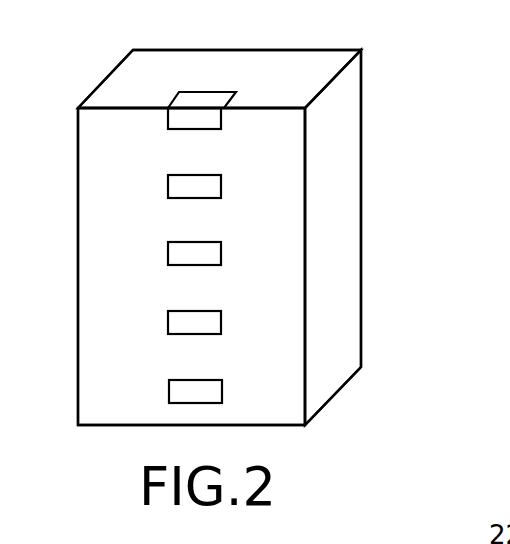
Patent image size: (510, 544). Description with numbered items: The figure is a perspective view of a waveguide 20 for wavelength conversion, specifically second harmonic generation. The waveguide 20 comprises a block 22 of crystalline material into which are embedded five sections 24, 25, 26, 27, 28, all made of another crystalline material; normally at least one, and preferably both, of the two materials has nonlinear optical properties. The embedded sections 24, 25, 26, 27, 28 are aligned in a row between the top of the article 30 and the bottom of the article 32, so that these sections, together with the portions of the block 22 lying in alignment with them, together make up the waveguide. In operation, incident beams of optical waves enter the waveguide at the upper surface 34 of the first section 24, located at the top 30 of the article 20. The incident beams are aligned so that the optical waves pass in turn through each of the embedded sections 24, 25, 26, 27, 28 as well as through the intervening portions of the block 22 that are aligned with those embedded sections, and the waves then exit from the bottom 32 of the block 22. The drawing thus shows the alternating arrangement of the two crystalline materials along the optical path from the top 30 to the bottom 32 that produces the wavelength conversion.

The waveguide 20 is at (218, 50).
The block 22 is at (361, 87).
The section 24 is at (221, 120).
The section 25 is at (221, 188).
The section 26 is at (221, 255).
The section 27 is at (221, 322).
The section 28 is at (222, 392).
The top of the article 30 is at (90, 92).
The bottom of the article 32 is at (106, 430).
The upper surface 34 is at (212, 92).